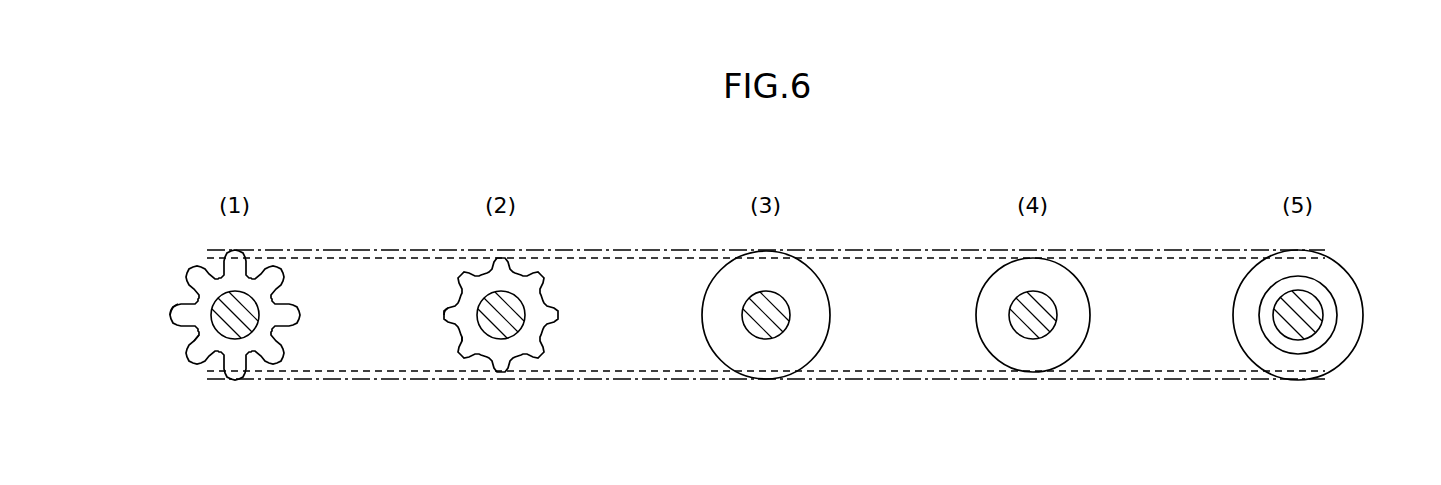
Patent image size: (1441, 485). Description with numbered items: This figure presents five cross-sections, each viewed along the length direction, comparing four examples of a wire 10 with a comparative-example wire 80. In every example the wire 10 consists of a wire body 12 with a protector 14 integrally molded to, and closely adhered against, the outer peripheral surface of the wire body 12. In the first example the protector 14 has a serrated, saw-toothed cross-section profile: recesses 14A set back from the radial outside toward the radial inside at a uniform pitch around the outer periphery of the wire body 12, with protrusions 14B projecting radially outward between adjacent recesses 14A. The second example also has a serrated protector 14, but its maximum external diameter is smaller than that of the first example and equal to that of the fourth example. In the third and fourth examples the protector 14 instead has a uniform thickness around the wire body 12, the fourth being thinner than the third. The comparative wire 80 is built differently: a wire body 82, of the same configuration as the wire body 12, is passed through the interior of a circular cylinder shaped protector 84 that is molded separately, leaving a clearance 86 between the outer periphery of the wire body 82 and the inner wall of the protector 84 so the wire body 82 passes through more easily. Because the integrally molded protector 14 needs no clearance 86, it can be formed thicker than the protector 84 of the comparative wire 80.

The wire 10 is at (625, 323).
The wire body 12 is at (243, 308).
The protector 14 is at (187, 361).
The recesses 14A is at (198, 329).
The protrusions 14B is at (171, 313).
The wire 80 is at (1297, 310).
The wire body 82 is at (1287, 314).
The protector 84 is at (1344, 344).
The clearance 86 is at (1331, 313).